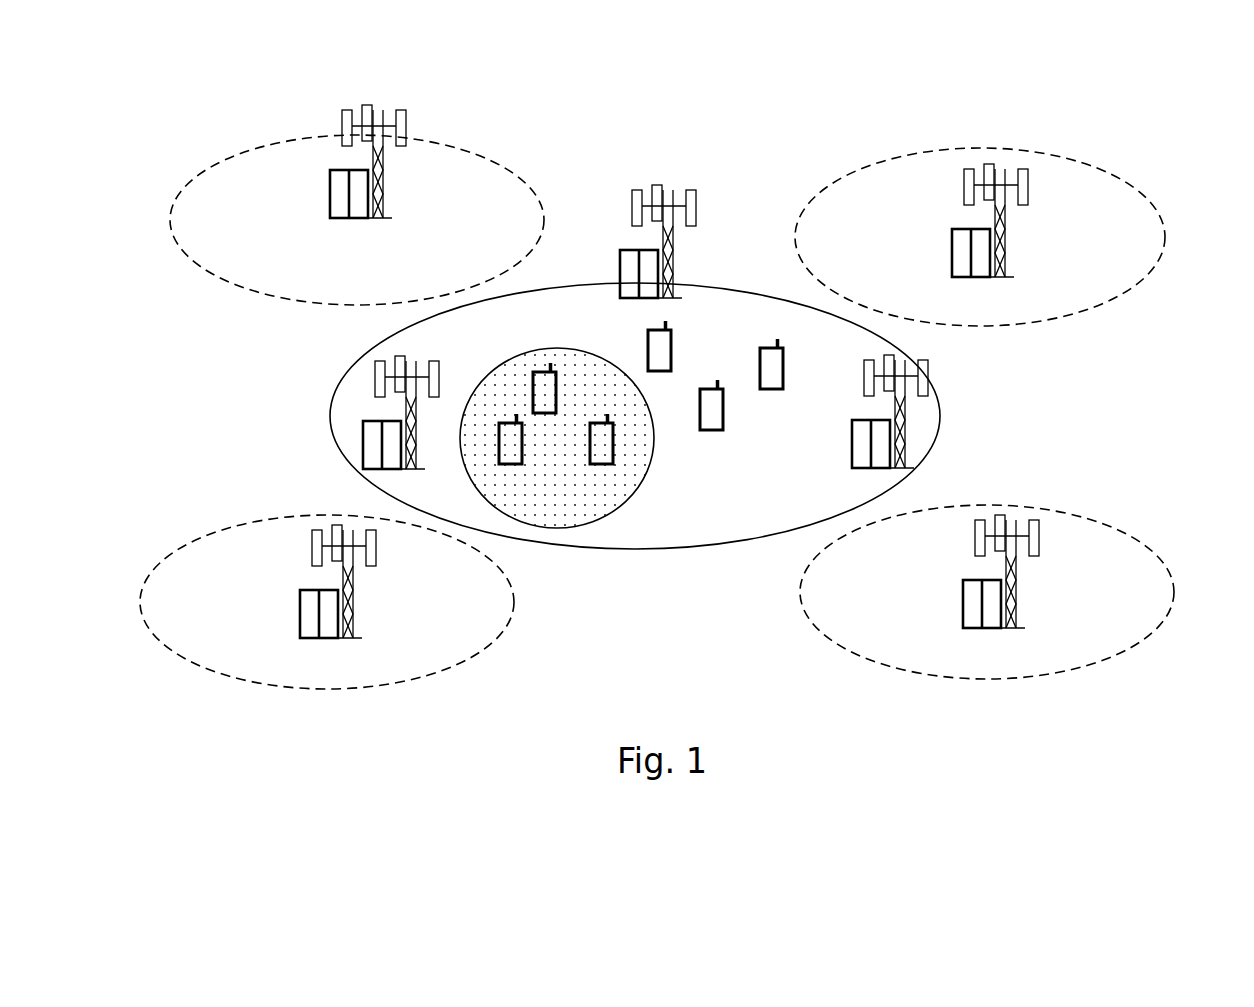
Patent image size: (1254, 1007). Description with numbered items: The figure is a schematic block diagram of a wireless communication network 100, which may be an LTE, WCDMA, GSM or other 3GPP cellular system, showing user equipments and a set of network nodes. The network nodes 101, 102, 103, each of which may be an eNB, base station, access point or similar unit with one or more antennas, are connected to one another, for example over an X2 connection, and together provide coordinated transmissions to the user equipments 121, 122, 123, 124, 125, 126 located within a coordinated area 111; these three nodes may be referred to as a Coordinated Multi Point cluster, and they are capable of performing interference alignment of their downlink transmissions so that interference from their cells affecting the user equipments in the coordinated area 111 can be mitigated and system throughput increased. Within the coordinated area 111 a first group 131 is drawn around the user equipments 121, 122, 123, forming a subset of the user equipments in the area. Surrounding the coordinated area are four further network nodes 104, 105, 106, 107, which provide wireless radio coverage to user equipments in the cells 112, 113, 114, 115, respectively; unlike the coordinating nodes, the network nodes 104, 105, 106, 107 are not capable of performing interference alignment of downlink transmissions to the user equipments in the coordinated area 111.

The wireless communication network 100 is at (1062, 728).
The network node 101 is at (363, 447).
The network node 102 is at (905, 462).
The network node 103 is at (672, 291).
The network node 104 is at (1006, 270).
The network node 105 is at (1016, 620).
The network node 106 is at (300, 617).
The network node 107 is at (330, 197).
The coordinated area 111 is at (696, 532).
The cell 112 is at (921, 250).
The cell 113 is at (914, 600).
The cell 114 is at (459, 616).
The cell 115 is at (494, 239).
The user equipment 121 is at (510, 456).
The user equipment 122 is at (569, 388).
The user equipment 123 is at (600, 456).
The user equipment 124 is at (687, 346).
The user equipment 125 is at (713, 423).
The user equipment 126 is at (773, 381).
The first group of user equipments 131 is at (565, 528).